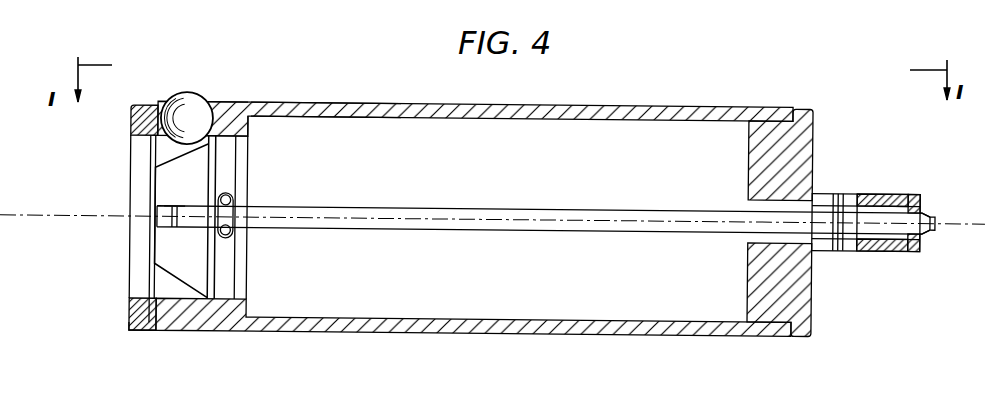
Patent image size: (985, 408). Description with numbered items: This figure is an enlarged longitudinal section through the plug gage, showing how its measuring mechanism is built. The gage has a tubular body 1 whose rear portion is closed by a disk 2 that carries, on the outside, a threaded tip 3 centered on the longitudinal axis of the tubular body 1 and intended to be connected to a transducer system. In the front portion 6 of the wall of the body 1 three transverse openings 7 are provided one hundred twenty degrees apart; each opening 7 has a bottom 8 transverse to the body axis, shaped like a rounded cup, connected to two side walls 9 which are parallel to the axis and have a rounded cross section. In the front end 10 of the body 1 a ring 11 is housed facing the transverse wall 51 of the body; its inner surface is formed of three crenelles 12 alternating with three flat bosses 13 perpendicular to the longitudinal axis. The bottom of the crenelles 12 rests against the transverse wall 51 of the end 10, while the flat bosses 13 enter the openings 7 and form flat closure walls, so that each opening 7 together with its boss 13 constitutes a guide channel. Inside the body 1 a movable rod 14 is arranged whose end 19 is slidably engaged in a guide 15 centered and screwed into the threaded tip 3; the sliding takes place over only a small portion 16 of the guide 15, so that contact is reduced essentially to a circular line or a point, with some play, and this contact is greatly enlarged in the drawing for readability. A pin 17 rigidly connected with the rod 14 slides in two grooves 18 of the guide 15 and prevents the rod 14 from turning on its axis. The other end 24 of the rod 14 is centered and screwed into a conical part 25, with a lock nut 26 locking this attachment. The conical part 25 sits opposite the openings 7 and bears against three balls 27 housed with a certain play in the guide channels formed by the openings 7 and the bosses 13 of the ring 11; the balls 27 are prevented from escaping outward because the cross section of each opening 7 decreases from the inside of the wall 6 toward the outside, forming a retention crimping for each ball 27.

The tubular body 1 is at (626, 104).
The disk 2 is at (788, 143).
The threaded tip 3 is at (840, 188).
The front portion of the wall 6 is at (310, 110).
The transverse opening 7 is at (232, 121).
The bottom 8 is at (217, 105).
The side wall 9 is at (190, 108).
The front end 10 is at (130, 332).
The ring 11 is at (128, 248).
The crenelle 12 is at (155, 280).
The flat boss 13 is at (146, 106).
The movable rod 14 is at (352, 206).
The guide 15 is at (930, 195).
The small portion 16 is at (933, 210).
The pin 17 is at (855, 250).
The groove 18 is at (826, 252).
The end of the rod 19 is at (927, 232).
The end of the rod 24 is at (162, 223).
The conical part 25 is at (193, 270).
The lock nut 26 is at (234, 243).
The ball 27 is at (165, 143).
The transverse wall 51 is at (150, 312).